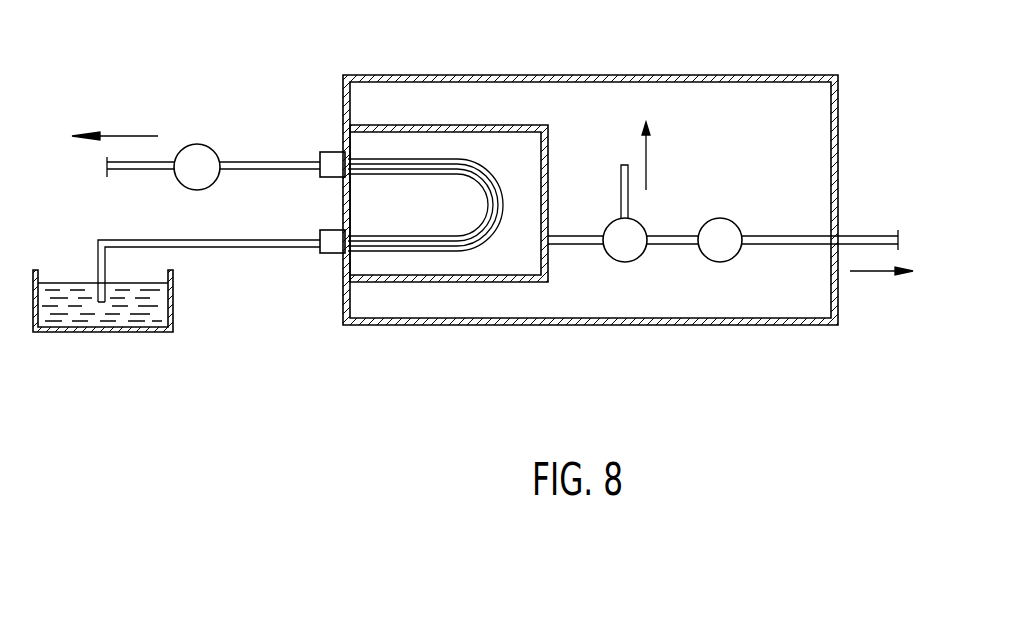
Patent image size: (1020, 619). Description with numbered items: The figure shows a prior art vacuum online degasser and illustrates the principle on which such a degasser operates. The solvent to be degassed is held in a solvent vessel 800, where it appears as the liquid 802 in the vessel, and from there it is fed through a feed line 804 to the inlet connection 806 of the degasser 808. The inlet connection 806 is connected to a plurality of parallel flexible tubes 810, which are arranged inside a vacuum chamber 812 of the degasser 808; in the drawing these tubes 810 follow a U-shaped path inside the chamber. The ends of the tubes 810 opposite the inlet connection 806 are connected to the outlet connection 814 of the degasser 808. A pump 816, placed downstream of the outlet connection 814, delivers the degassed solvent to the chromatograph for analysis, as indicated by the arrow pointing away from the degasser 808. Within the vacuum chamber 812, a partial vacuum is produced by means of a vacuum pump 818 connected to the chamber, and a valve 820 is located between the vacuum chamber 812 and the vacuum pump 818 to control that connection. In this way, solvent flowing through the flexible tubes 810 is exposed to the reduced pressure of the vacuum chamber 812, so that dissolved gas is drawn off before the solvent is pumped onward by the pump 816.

The solvent vessel 800 is at (158, 332).
The liquid 802 is at (93, 315).
The feed line 804 is at (238, 247).
The inlet connection 806 is at (330, 253).
The degasser 808 is at (724, 76).
The parallel flexible tubes 810 is at (462, 158).
The vacuum chamber 812 is at (458, 258).
The outlet connection 814 is at (324, 152).
The pump 816 is at (197, 144).
The vacuum pump 818 is at (722, 218).
The valve 820 is at (630, 262).